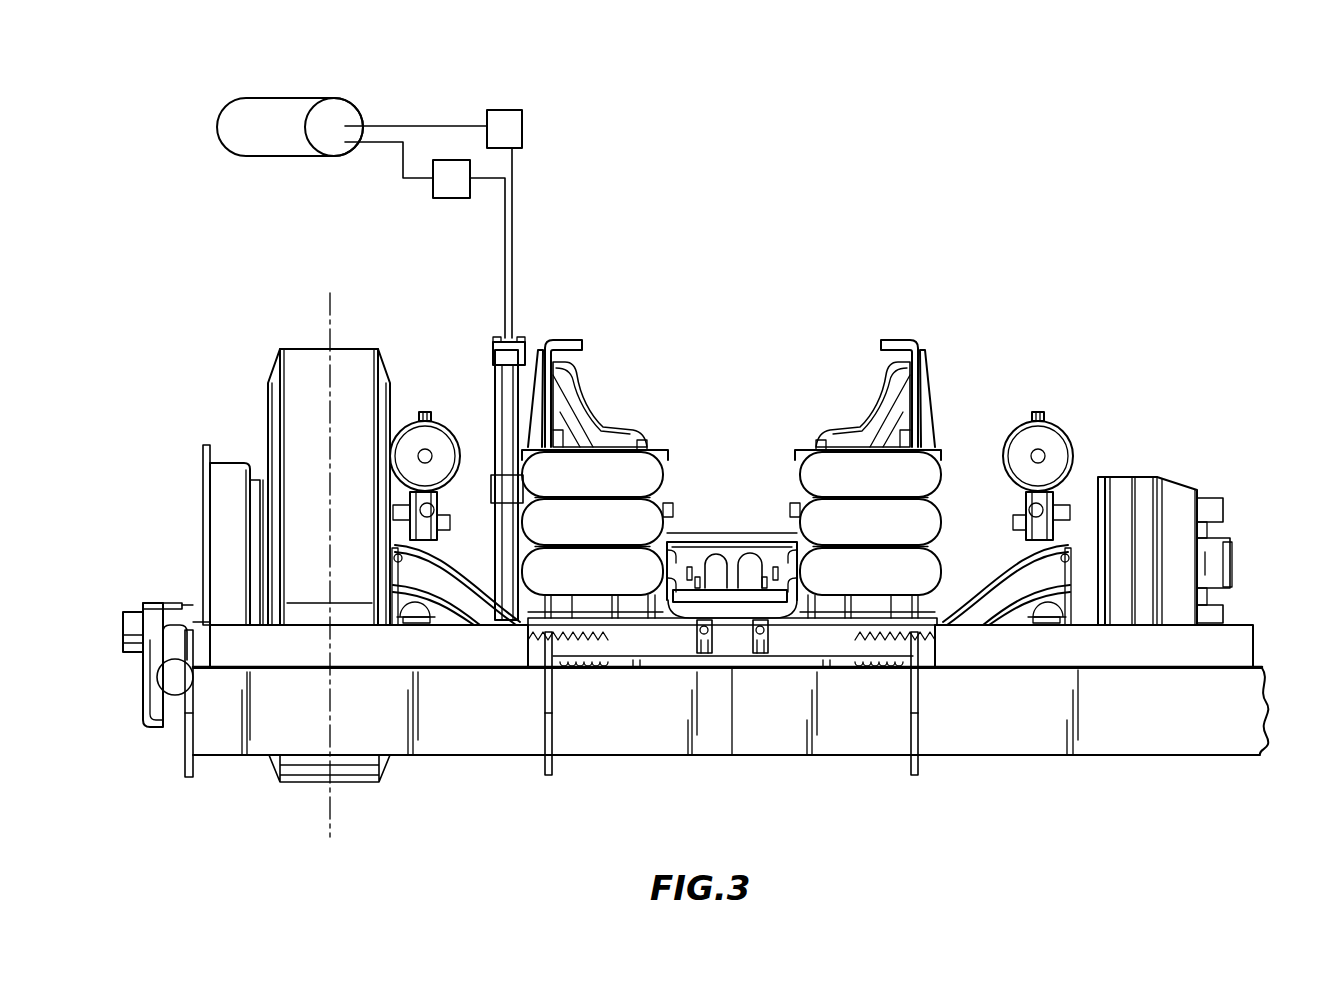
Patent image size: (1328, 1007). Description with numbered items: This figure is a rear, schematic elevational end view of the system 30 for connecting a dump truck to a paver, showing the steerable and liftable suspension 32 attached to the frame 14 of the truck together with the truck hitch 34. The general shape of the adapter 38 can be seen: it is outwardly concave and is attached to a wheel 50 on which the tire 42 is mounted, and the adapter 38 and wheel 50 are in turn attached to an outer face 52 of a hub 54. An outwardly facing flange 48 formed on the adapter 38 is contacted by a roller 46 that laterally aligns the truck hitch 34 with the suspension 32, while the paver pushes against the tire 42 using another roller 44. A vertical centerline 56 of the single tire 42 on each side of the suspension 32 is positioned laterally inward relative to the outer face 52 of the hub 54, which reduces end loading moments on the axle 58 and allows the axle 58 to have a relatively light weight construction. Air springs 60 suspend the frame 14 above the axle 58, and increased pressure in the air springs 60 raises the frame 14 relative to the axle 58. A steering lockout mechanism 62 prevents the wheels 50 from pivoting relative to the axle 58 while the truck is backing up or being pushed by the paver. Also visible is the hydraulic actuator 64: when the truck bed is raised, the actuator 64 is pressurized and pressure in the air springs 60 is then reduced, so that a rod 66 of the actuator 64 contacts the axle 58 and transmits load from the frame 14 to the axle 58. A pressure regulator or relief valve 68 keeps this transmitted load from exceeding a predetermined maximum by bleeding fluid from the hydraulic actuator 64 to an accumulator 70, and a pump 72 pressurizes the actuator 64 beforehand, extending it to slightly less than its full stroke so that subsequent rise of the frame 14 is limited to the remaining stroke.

The frame 14 is at (897, 338).
The system 30 is at (685, 350).
The suspension 32 is at (965, 409).
The truck hitch 34 is at (670, 755).
The adapter 38 is at (237, 463).
The tire 42 is at (383, 355).
The roller 44 is at (393, 652).
The roller 46 is at (178, 637).
The flange 48 is at (203, 448).
The wheel 50 is at (263, 477).
The outer face 52 is at (1205, 571).
The hub 54 is at (1183, 485).
The vertical centerline 56 is at (333, 300).
The axle 58 is at (1008, 562).
The air springs 60 is at (797, 492).
The steering lockout mechanism 62 is at (740, 565).
The hydraulic actuator 64 is at (492, 387).
The rod 66 is at (490, 543).
The pressure regulator 68 is at (522, 126).
The accumulator 70 is at (248, 100).
The pump 72 is at (433, 190).